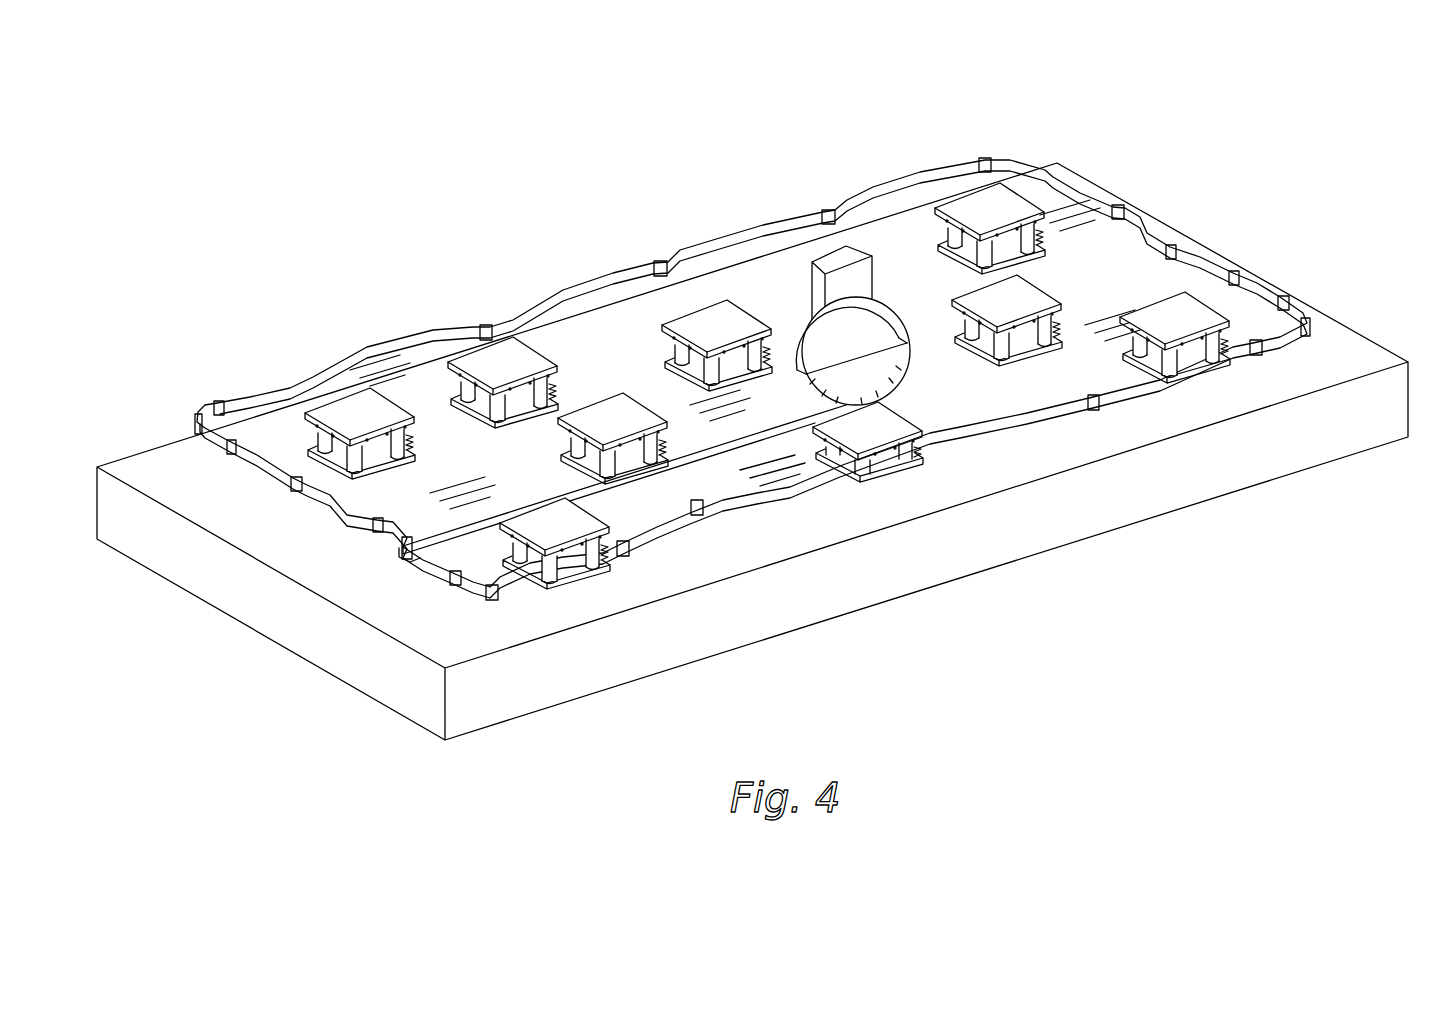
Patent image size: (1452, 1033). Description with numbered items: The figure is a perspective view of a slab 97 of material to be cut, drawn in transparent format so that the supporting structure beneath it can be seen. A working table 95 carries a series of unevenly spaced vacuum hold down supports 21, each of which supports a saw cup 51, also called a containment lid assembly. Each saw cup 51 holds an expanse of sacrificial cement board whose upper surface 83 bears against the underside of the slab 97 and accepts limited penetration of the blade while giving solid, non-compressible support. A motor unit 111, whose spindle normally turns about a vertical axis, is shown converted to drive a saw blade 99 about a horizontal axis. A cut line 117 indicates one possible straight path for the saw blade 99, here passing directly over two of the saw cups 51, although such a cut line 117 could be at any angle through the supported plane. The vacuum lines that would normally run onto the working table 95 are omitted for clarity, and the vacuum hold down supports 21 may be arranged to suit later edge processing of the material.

The vacuum hold down support 21 is at (322, 456).
The saw cup 51 is at (810, 407).
The upper surface 83 is at (380, 421).
The working table 95 is at (1357, 347).
The slab 97 is at (970, 160).
The saw blade 99 is at (838, 393).
The motor unit 111 is at (853, 253).
The cut line 117 is at (430, 538).